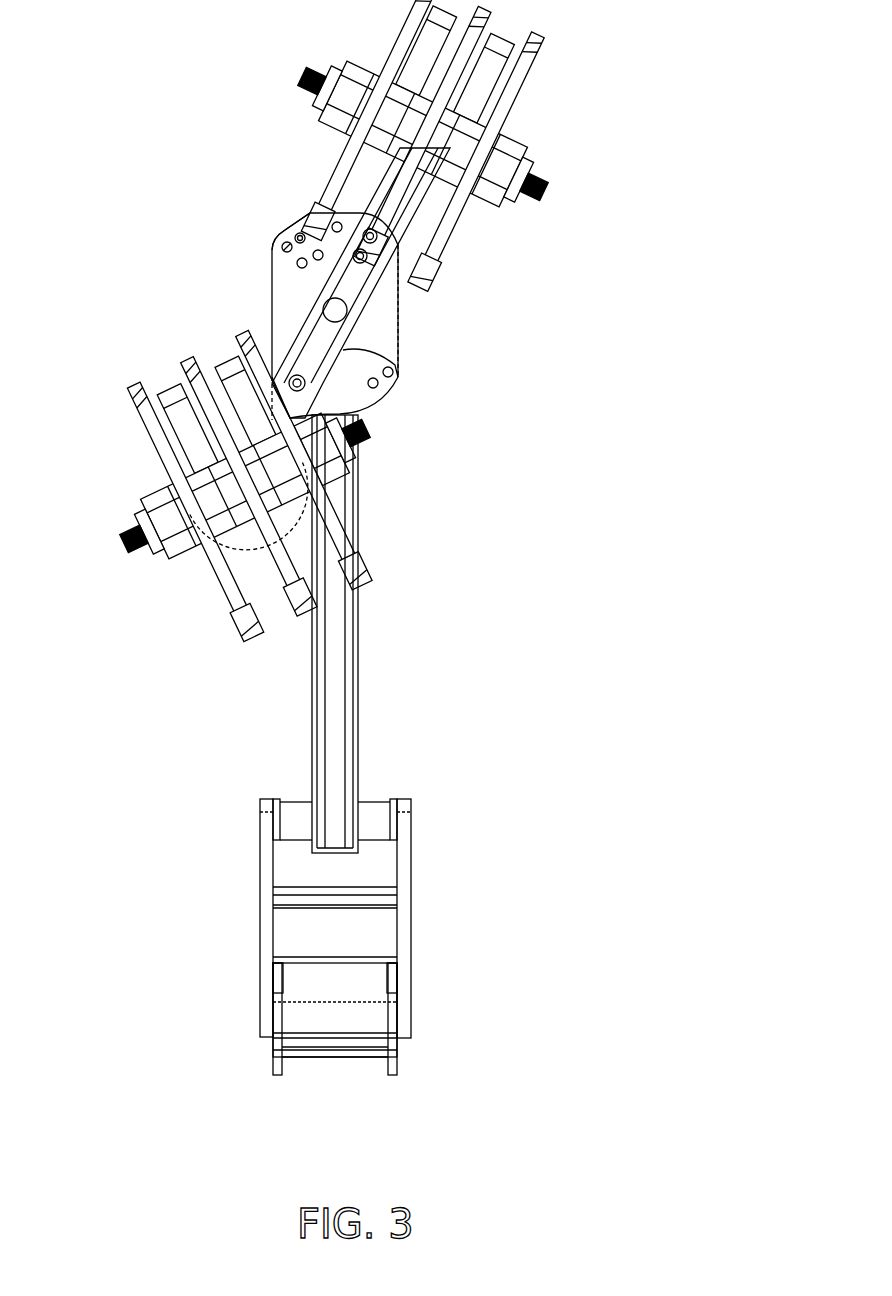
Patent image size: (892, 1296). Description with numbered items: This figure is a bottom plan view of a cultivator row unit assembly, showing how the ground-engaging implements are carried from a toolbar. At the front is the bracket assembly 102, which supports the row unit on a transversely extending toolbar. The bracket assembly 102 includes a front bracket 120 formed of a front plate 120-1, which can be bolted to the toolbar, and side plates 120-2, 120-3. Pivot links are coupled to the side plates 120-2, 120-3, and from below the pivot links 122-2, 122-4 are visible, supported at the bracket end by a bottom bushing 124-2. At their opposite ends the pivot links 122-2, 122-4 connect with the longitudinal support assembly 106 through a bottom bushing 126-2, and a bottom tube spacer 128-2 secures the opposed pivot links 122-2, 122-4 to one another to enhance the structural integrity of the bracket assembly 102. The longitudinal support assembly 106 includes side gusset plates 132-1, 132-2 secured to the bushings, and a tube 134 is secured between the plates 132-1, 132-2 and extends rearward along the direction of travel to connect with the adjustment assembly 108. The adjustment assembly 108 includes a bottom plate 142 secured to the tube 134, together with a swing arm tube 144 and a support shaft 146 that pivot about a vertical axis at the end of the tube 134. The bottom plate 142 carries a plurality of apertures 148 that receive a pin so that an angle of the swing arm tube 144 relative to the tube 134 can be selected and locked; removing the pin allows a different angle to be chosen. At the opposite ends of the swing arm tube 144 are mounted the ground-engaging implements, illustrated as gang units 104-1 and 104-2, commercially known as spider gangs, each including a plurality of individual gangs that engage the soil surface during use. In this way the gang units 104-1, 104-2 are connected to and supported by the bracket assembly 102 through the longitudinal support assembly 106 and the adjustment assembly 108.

The bracket assembly 102 is at (338, 957).
The gang unit 104-1 is at (203, 595).
The gang unit 104-2 is at (542, 85).
The longitudinal support assembly 106 is at (280, 750).
The adjustment assembly 108 is at (443, 298).
The front bracket 120 is at (338, 1055).
The front plate 120-1 is at (333, 1057).
The side plate 120-2 is at (273, 1057).
The side plate 120-3 is at (397, 1057).
The pivot link 122-2 is at (260, 858).
The pivot link 122-4 is at (411, 858).
The bottom bushing 124-2 is at (367, 1013).
The bottom bushing 126-2 is at (375, 808).
The bottom tube spacer 128-2 is at (378, 900).
The side gusset plate 132-1 is at (312, 707).
The side gusset plate 132-2 is at (358, 722).
The tube 134 is at (340, 658).
The bottom plate 142 is at (285, 279).
The swing arm tube 144 is at (343, 350).
The support shaft 146 is at (340, 312).
The apertures 148 is at (288, 226).